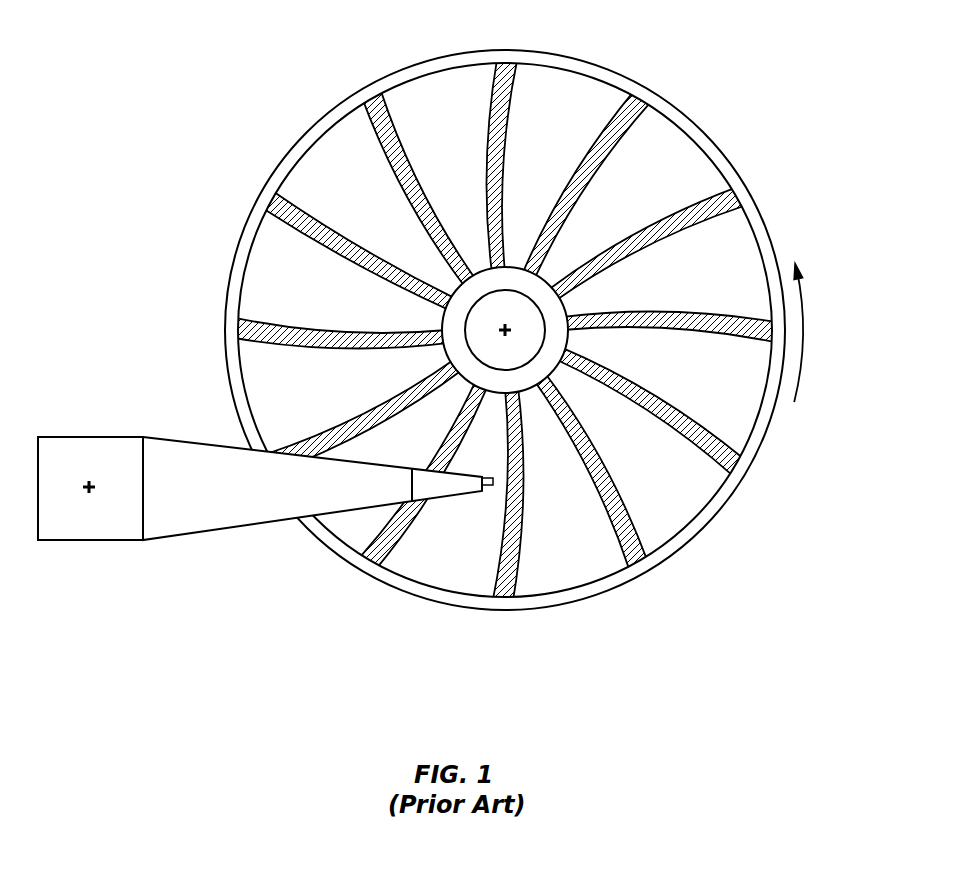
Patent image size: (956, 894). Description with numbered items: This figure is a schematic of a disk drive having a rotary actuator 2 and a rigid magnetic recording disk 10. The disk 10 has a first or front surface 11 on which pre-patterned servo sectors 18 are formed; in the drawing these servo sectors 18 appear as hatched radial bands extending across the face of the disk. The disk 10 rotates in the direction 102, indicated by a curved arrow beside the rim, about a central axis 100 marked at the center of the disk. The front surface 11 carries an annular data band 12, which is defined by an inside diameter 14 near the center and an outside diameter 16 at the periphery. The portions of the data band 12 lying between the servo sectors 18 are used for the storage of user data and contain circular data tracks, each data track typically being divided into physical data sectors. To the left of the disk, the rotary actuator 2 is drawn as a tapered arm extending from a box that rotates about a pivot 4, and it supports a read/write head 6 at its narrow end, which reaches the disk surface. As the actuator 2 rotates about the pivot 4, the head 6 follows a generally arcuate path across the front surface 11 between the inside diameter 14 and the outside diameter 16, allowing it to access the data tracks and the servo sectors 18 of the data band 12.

The rotary actuator 2 is at (262, 498).
The pivot 4 is at (89, 485).
The read/write head 6 is at (490, 488).
The rigid magnetic recording disk 10 is at (511, 334).
The front surface 11 is at (505, 334).
The annular data band 12 is at (505, 334).
The inside diameter 14 is at (550, 283).
The outside diameter 16 is at (562, 62).
The pre-patterned servo sectors 18 is at (497, 68).
The central axis 100 is at (508, 332).
The direction of rotation 102 is at (805, 302).